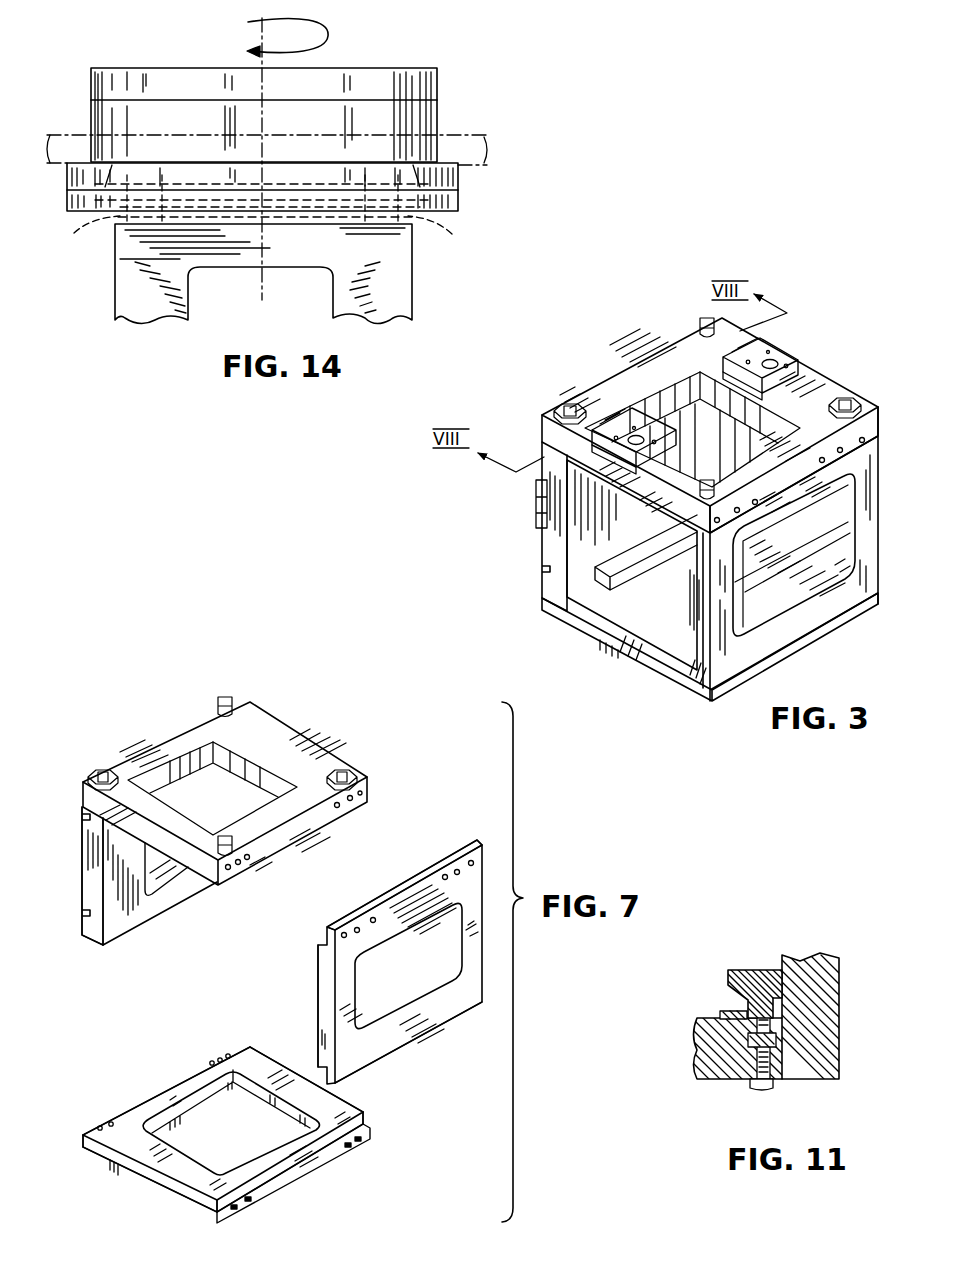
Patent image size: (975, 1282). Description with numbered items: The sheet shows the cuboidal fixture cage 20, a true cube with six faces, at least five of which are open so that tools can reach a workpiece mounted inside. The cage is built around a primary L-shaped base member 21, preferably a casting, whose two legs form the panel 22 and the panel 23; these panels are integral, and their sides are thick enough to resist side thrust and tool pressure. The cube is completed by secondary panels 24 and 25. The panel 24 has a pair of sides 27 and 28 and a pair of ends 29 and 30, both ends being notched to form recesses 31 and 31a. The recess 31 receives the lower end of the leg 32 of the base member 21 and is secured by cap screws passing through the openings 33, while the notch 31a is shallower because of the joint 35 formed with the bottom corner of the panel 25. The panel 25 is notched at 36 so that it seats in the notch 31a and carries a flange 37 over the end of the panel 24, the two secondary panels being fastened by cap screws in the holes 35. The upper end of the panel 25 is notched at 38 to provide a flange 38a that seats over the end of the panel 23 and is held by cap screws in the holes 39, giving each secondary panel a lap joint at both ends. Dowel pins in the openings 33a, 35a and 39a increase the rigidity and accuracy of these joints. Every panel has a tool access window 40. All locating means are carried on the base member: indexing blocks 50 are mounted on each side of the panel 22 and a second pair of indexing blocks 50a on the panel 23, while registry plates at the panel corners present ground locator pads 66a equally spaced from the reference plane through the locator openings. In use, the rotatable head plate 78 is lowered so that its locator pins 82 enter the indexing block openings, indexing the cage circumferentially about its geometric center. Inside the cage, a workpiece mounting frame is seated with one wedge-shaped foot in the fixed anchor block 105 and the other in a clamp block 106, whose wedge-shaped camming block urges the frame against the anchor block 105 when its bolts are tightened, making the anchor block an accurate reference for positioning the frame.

In FIG. 14, the cuboidal fixture cage 20 is at (418, 284).
In FIG. 14, the head plate 78 is at (460, 177).
In FIG. 14, the locator pins 82 is at (263, 214).
In FIG. 7, the base L-shaped member 21 is at (202, 802).
In FIG. 3, the panel 22 is at (540, 556).
In FIG. 7, the panel 22 is at (127, 870).
In FIG. 11, the panel 22 is at (733, 1086).
In FIG. 3, the panel 23 is at (822, 372).
In FIG. 7, the panel 23 is at (292, 728).
In FIG. 3, the secondary panel 24 is at (627, 657).
In FIG. 7, the secondary panel 24 is at (232, 1123).
In FIG. 3, the secondary panel 25 is at (886, 496).
In FIG. 7, the secondary panel 25 is at (376, 961).
In FIG. 7, the side 27 is at (141, 1145).
In FIG. 7, the side 28 is at (270, 1068).
In FIG. 7, the end 29 is at (160, 1093).
In FIG. 7, the end 30 is at (312, 1172).
In FIG. 7, the recess 31 is at (88, 1138).
In FIG. 7, the recess 31a is at (368, 1120).
In FIG. 7, the leg 32 is at (92, 868).
In FIG. 7, the openings 33 is at (100, 1125).
In FIG. 7, the dowel pin openings 33a is at (112, 1121).
In FIG. 7, the holes 35 is at (262, 1190).
In FIG. 7, the dowel pin openings 35a is at (368, 1140).
In FIG. 7, the notch 36 is at (315, 1072).
In FIG. 7, the flange 37 is at (355, 1064).
In FIG. 7, the notch 38 is at (325, 947).
In FIG. 7, the flange 38a is at (430, 890).
In FIG. 3, the holes 39 is at (866, 440).
In FIG. 7, the holes 39 is at (364, 794).
In FIG. 7, the dowel pin openings 39a is at (375, 917).
In FIG. 7, the tool access window 40 is at (428, 983).
In FIG. 3, the indexing blocks 50 is at (536, 507).
In FIG. 3, the indexing blocks 50a is at (646, 428).
In FIG. 3, the locator pads 66a is at (556, 400).
In FIG. 7, the locator pads 66a is at (221, 704).
In FIG. 3, the anchor block 105 is at (608, 588).
In FIG. 11, the clamp block 106 is at (755, 968).